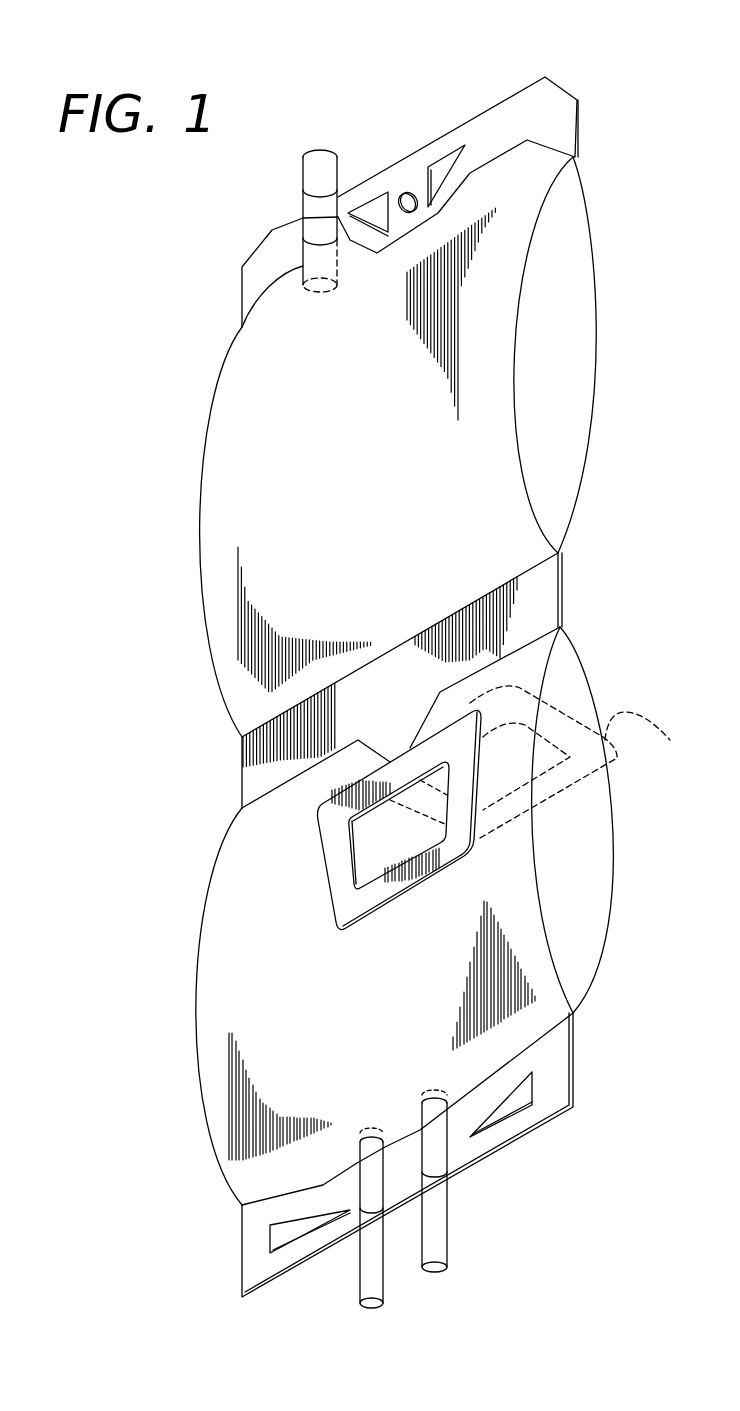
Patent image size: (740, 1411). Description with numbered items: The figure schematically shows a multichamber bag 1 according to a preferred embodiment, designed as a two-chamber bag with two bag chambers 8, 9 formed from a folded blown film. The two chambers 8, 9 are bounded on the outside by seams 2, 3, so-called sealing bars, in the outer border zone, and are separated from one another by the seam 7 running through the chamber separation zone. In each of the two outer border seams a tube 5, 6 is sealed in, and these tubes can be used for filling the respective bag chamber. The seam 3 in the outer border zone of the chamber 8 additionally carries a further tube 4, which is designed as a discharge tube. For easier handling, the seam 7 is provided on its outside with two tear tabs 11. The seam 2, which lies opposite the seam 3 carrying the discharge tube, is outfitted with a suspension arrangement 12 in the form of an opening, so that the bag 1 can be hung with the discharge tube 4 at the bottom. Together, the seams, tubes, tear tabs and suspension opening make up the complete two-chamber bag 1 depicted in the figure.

The multichamber bag 1 is at (615, 108).
The seam 2 is at (270, 257).
The seam 3 is at (248, 1223).
The tube 4 is at (433, 1227).
The tube 5 is at (370, 1282).
The tube 6 is at (320, 167).
The seam 7 is at (258, 783).
The bag chamber 8 is at (571, 857).
The bag chamber 9 is at (555, 405).
The tear tab 11 is at (286, 975).
The suspension arrangement 12 is at (400, 193).